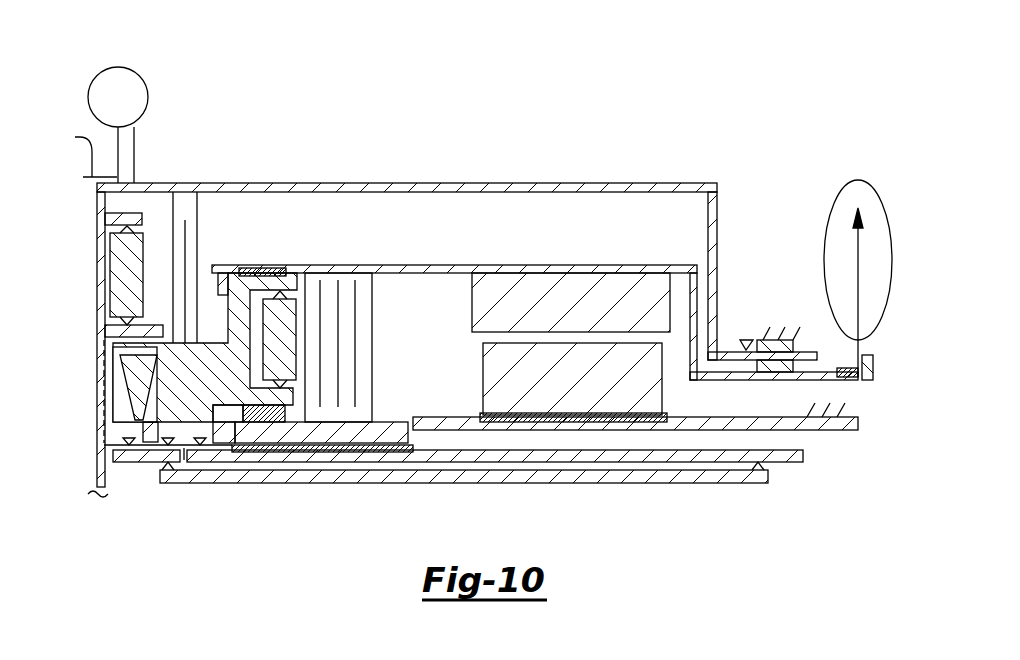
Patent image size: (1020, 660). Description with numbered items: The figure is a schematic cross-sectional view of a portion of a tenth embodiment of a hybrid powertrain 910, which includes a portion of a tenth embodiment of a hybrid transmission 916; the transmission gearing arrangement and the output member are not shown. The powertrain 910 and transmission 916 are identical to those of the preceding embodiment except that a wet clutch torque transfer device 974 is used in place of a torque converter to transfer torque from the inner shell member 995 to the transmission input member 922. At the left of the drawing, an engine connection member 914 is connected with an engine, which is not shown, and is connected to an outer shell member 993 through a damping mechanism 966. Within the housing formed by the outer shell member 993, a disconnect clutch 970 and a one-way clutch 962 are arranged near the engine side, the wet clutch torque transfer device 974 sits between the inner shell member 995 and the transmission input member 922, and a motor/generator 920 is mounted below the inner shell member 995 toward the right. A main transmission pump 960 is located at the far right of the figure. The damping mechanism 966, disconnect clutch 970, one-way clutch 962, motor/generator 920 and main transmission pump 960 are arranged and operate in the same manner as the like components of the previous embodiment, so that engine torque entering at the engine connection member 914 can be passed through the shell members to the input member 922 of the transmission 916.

The hybrid powertrain 910 is at (555, 137).
The engine connection member 914 is at (81, 152).
The hybrid transmission 916 is at (367, 163).
The motor/generator 920 is at (451, 347).
The transmission input member 922 is at (787, 452).
The main transmission pump 960 is at (882, 193).
The one-way clutch 962 is at (125, 401).
The damping mechanism 966 is at (137, 72).
The disconnect clutch 970 is at (210, 216).
The wet clutch torque transfer device 974 is at (390, 298).
The outer shell member 993 is at (280, 184).
The inner shell member 995 is at (500, 265).